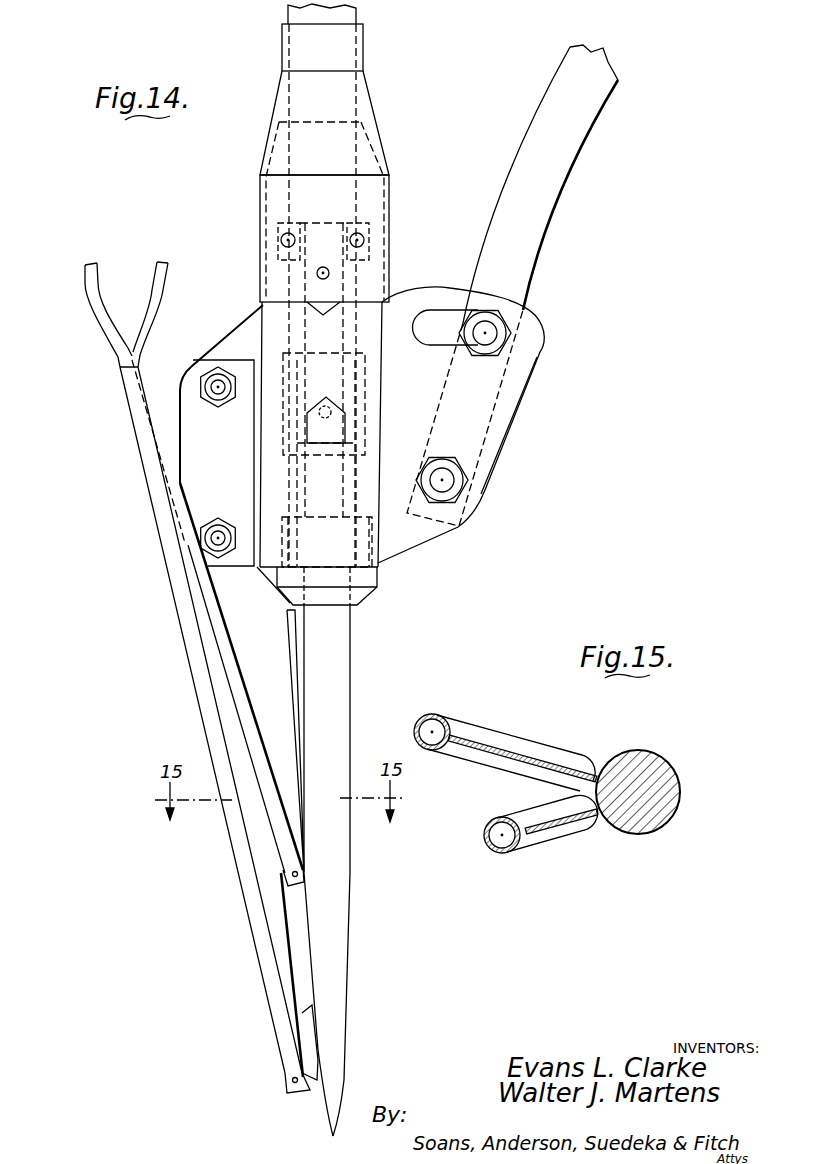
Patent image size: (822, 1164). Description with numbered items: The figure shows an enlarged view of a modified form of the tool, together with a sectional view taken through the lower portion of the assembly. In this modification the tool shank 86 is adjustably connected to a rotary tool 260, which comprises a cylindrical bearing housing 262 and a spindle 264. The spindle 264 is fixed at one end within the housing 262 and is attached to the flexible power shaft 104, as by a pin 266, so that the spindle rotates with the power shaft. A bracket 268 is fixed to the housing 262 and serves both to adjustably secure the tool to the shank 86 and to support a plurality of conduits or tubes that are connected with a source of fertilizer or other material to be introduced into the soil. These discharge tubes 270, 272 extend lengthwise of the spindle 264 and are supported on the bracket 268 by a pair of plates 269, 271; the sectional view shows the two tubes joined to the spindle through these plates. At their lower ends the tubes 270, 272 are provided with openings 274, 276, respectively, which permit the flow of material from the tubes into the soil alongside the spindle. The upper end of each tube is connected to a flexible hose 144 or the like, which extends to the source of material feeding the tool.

In FIG. 14, the flexible power shaft 104 is at (356, 10).
In FIG. 14, the rotary tool 260 is at (386, 140).
In FIG. 14, the cylindrical bearing housing 262 is at (260, 200).
In FIG. 14, the pin 266 is at (330, 272).
In FIG. 14, the tool shank 86 is at (545, 250).
In FIG. 14, the flexible hose 144 is at (170, 268).
In FIG. 14, the bracket 268 is at (238, 334).
In FIG. 14, the tube 272 is at (180, 618).
In FIG. 15, the tube 272 is at (490, 735).
In FIG. 14, the tube 270 is at (230, 667).
In FIG. 15, the tube 270 is at (525, 840).
In FIG. 14, the spindle 264 is at (352, 660).
In FIG. 15, the spindle 264 is at (677, 777).
In FIG. 14, the plate 269 is at (290, 693).
In FIG. 15, the plate 269 is at (547, 827).
In FIG. 14, the opening 274 is at (302, 874).
In FIG. 14, the plate 271 is at (278, 940).
In FIG. 15, the plate 271 is at (547, 763).
In FIG. 14, the opening 276 is at (292, 1079).